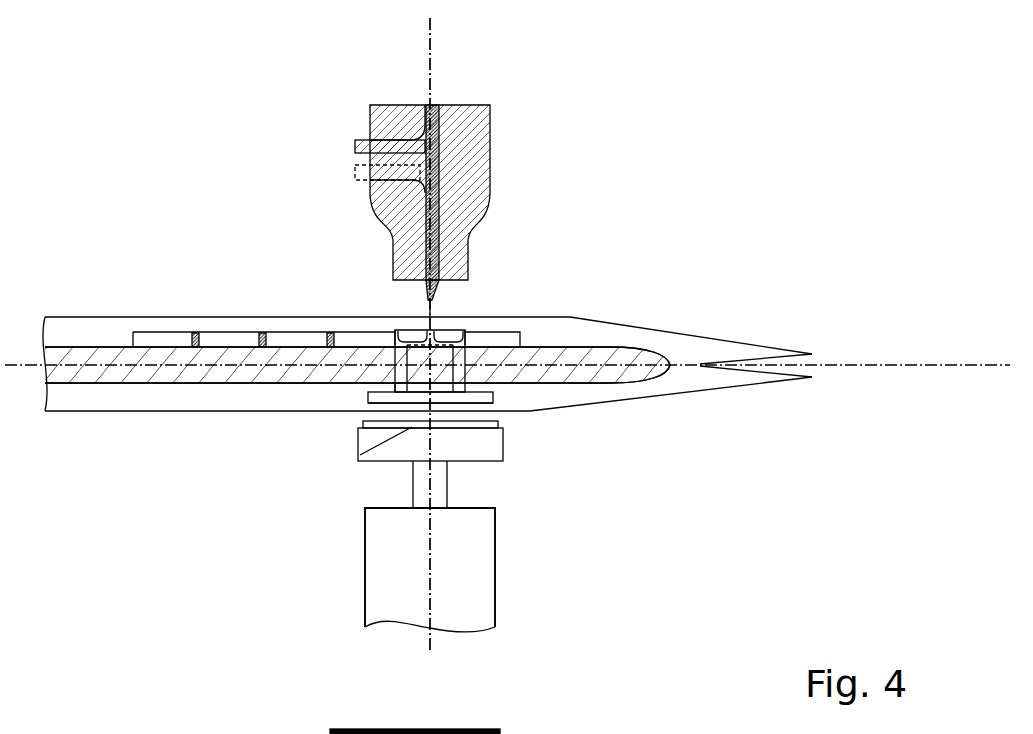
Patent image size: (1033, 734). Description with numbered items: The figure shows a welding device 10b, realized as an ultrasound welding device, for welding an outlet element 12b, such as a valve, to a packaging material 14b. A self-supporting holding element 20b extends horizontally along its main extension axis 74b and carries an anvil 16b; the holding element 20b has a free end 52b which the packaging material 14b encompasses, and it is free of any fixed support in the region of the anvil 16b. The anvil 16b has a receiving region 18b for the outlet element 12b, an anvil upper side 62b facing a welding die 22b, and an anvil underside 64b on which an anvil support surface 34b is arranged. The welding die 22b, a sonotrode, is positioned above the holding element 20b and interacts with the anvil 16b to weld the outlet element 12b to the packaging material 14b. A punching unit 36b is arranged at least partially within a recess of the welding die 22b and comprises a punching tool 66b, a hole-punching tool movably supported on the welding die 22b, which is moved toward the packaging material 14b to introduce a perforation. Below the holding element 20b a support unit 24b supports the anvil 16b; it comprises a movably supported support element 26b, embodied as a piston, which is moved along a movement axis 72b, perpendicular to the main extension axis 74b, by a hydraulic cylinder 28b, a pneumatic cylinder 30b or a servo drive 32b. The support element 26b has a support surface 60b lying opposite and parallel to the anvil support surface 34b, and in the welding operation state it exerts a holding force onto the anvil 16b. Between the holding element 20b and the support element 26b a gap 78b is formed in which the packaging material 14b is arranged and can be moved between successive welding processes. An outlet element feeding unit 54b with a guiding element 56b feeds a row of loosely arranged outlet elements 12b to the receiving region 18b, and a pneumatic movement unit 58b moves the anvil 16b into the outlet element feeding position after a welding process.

The welding device 10b is at (128, 172).
The outlet element 12b is at (466, 332).
The packaging material 14b is at (640, 328).
The anvil 16b is at (370, 394).
The receiving region 18b is at (401, 313).
The holding element 20b is at (105, 368).
The welding die 22b is at (460, 130).
The support unit 24b is at (584, 547).
The support element 26b is at (482, 442).
The hydraulic cylinder 28b is at (392, 607).
The pneumatic cylinder 30b is at (430, 567).
The servo drive 32b is at (430, 567).
The anvil support surface 34b is at (358, 426).
The punching unit 36b is at (338, 158).
The free end 52b is at (605, 358).
The outlet element feeding unit 54b is at (219, 304).
The guiding element 56b is at (107, 345).
The movement unit 58b is at (393, 383).
The support surface 60b is at (366, 408).
The anvil upper side 62b is at (451, 314).
The anvil underside 64b is at (446, 424).
The punching tool 66b is at (443, 193).
The movement axis 72b is at (430, 53).
The main extension axis 74b is at (832, 366).
The gap 78b is at (517, 418).